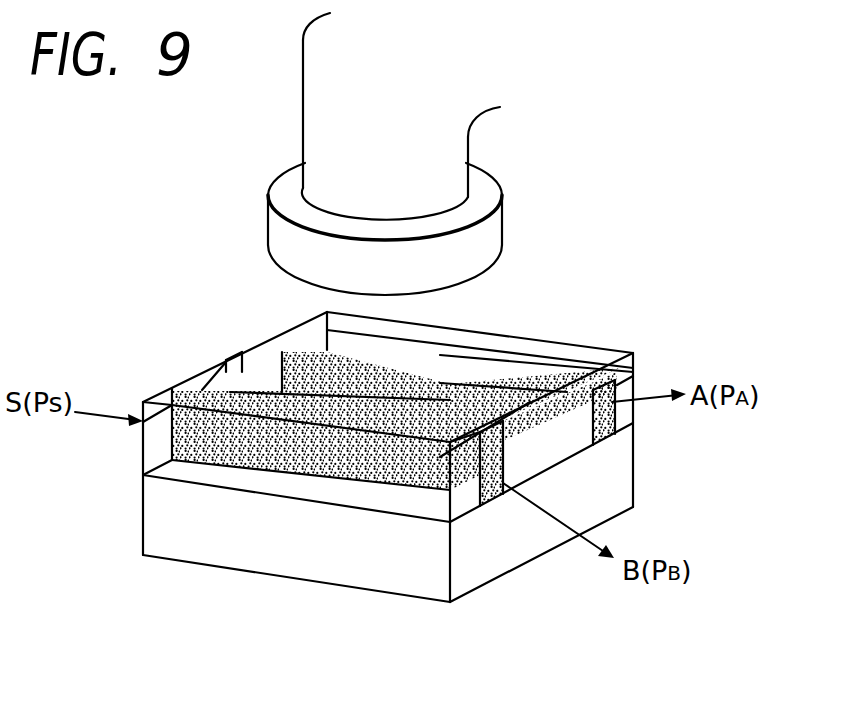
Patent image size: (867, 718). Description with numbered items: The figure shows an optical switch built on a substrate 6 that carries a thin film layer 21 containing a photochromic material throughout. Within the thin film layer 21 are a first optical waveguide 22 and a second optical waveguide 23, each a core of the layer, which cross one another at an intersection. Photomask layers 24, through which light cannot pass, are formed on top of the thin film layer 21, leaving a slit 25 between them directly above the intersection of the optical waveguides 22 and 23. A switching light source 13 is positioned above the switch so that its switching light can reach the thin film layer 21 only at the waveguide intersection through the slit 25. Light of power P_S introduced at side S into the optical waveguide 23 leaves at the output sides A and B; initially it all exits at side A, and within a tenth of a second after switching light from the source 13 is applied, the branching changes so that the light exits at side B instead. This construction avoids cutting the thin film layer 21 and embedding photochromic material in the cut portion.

The substrate 6 is at (537, 540).
The switching light source 13 is at (447, 140).
The thin film layer 21 is at (140, 452).
The first optical waveguide 22 is at (490, 490).
The second optical waveguide 23 is at (620, 415).
The photomask layers 24 is at (180, 384).
The slit 25 is at (237, 357).